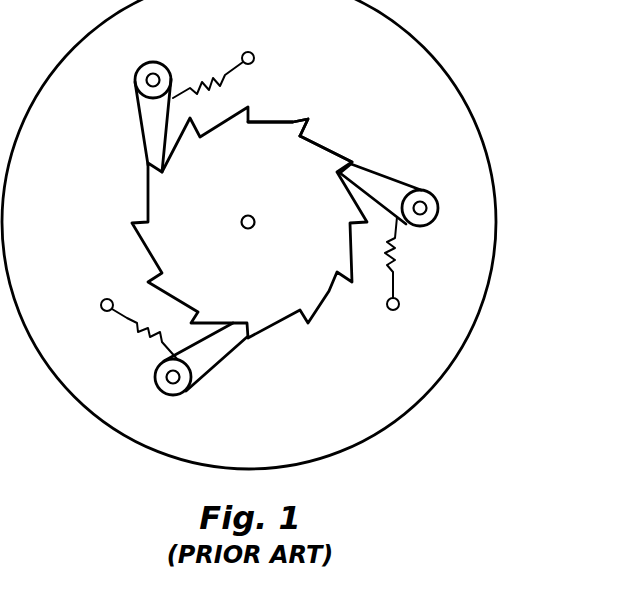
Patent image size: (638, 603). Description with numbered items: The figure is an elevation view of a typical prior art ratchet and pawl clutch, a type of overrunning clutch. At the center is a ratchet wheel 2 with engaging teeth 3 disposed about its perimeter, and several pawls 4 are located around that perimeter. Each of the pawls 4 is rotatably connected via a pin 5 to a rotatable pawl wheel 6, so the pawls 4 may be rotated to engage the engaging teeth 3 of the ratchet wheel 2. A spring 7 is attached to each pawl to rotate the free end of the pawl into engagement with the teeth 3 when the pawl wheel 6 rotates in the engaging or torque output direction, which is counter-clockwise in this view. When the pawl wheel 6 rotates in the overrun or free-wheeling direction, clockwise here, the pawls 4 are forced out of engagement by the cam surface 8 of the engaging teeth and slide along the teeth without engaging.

The ratchet wheel 2 is at (187, 212).
The engaging teeth 3 is at (293, 128).
The pawls 4 is at (384, 192).
The pins 5 is at (428, 209).
The pawl wheel 6 is at (373, 380).
The spring 7 is at (400, 253).
The cam surface 8 is at (329, 148).